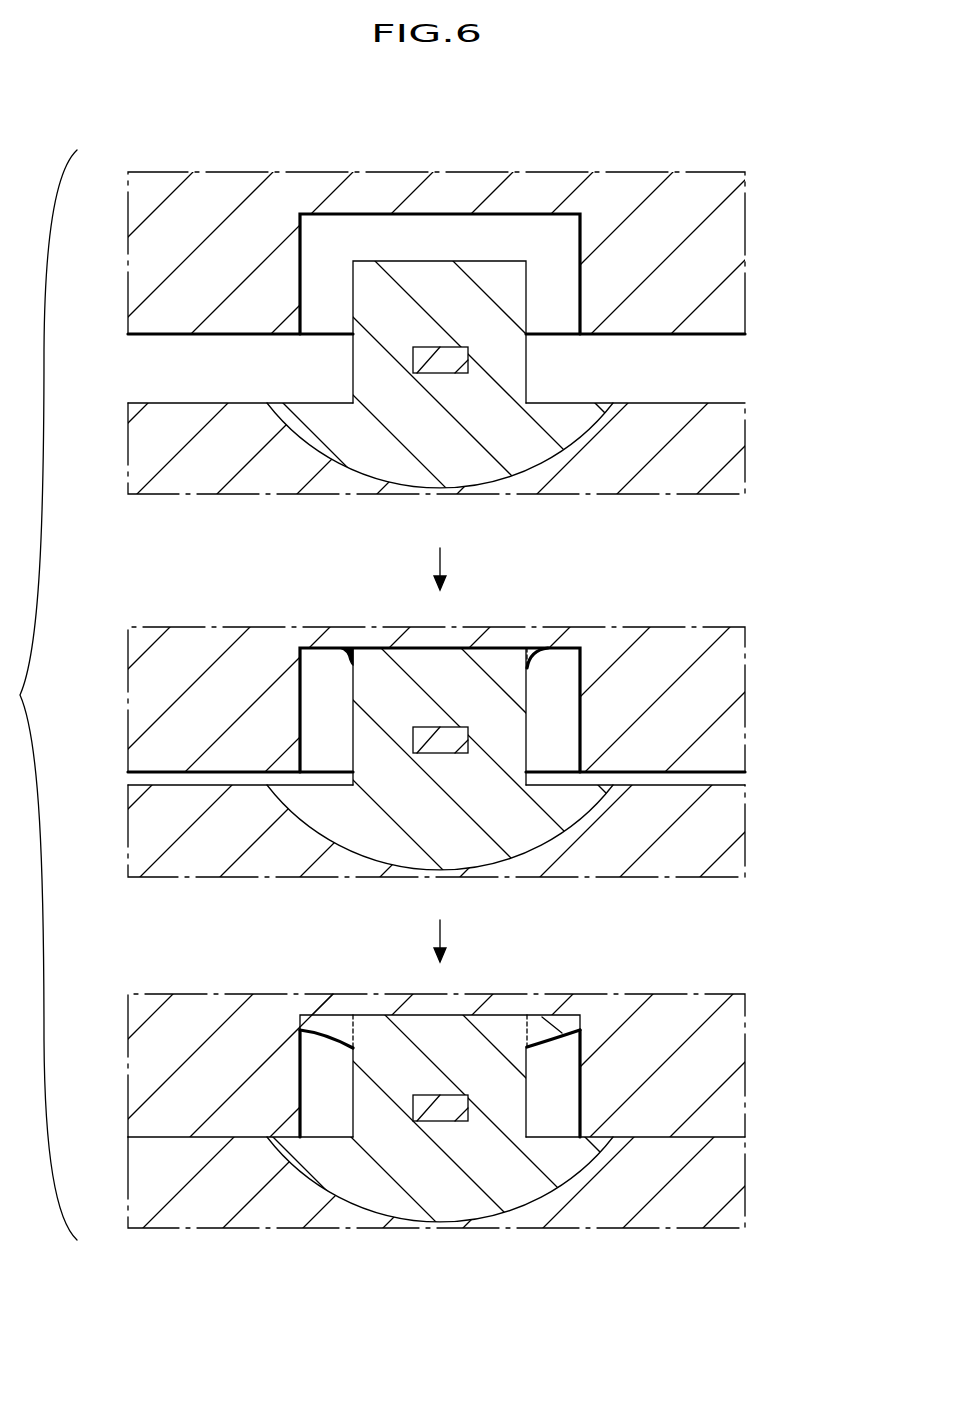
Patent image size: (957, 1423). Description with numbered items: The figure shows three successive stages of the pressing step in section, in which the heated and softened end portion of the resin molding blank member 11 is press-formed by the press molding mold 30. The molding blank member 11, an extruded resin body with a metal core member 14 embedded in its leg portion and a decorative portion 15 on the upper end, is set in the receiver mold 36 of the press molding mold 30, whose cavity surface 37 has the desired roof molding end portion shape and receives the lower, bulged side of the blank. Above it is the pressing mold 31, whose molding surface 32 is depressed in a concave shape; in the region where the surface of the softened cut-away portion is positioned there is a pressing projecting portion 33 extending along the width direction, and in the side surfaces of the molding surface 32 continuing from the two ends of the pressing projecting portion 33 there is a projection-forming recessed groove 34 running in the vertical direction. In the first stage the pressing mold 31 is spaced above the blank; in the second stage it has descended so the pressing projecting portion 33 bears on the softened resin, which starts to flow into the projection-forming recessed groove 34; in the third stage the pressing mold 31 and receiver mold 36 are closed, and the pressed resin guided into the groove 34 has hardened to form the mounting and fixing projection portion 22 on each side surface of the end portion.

The molding blank member 11 is at (486, 767).
The metal core member 14 is at (440, 357).
The decorative portion 15 is at (368, 472).
The mounting and fixing projection portion 22 is at (348, 646).
The press molding mold 30 is at (807, 342).
The pressing mold 31 is at (734, 317).
The molding surface 32 is at (468, 632).
The pressing projecting portion 33 is at (490, 214).
The projection-forming recessed groove 34 is at (301, 283).
The receiver mold 36 is at (738, 417).
The cavity surface 37 is at (486, 475).